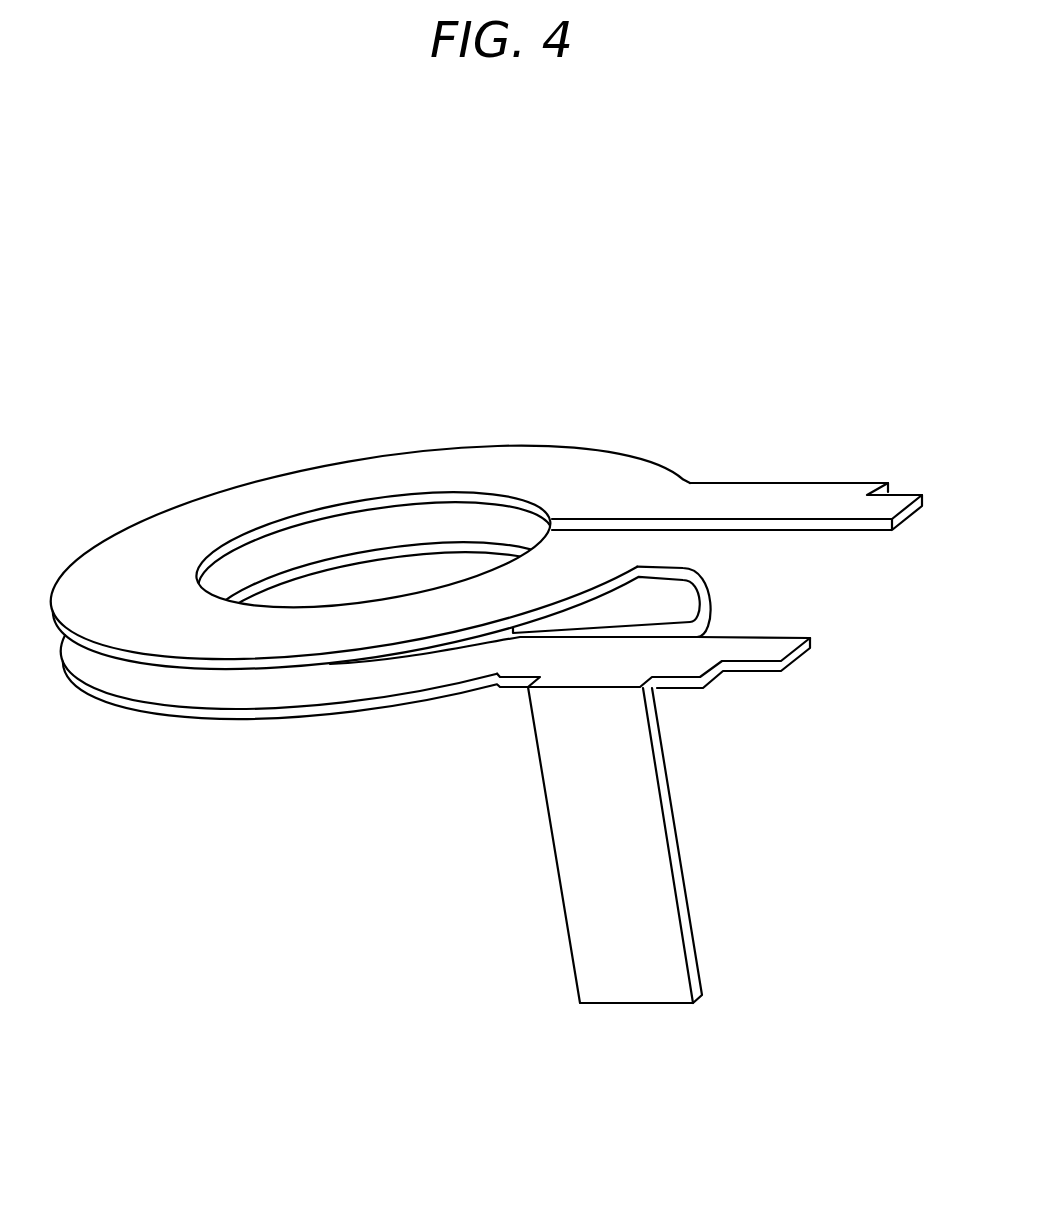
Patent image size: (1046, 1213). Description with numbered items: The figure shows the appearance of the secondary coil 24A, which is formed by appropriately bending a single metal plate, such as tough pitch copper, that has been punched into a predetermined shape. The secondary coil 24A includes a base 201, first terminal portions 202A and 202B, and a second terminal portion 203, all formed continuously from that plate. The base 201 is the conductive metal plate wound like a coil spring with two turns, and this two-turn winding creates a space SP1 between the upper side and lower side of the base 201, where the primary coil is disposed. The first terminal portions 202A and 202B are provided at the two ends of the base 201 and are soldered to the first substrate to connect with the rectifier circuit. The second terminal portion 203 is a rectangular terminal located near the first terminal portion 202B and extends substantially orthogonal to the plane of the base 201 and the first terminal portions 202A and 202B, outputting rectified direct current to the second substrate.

The secondary coil 24A is at (409, 238).
The base 201 is at (220, 505).
The first terminal portion 202A is at (900, 505).
The first terminal portion 202B is at (762, 651).
The second terminal portion 203 is at (573, 892).
The space SP1 is at (259, 700).